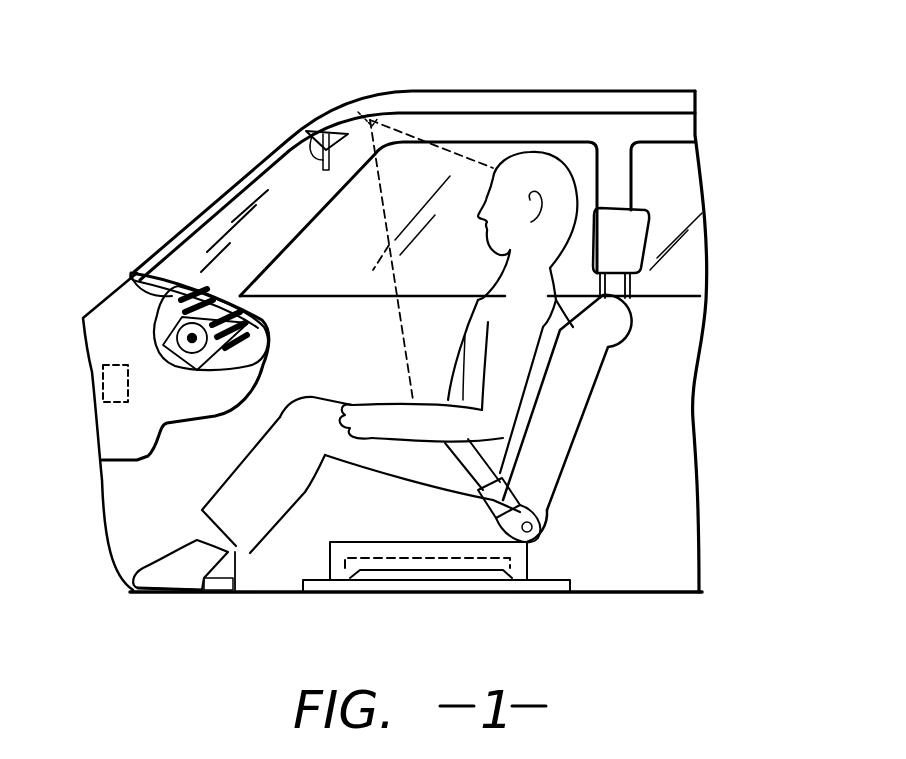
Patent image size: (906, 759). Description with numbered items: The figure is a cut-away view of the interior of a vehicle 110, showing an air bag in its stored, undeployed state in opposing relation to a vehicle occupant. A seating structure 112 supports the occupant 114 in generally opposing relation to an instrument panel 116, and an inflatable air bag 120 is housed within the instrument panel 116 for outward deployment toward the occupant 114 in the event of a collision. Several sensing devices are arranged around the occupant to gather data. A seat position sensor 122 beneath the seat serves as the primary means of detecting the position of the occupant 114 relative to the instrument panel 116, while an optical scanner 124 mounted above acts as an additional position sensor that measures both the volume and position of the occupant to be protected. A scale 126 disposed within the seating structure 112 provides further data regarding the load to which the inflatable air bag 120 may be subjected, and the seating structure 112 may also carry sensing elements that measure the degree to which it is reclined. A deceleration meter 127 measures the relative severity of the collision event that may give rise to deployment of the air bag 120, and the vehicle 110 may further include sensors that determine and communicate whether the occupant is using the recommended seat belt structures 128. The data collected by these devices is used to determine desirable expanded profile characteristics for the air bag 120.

The vehicle 110 is at (738, 92).
The seating structure 112 is at (597, 395).
The occupant 114 is at (532, 152).
The instrument panel 116 is at (116, 322).
The inflatable air bag 120 is at (180, 300).
The seat position sensor 122 is at (332, 548).
The optical scanner 124 is at (363, 113).
The scale 126 is at (532, 548).
The deceleration meter 127 is at (103, 383).
The seat belt structures 128 is at (497, 462).